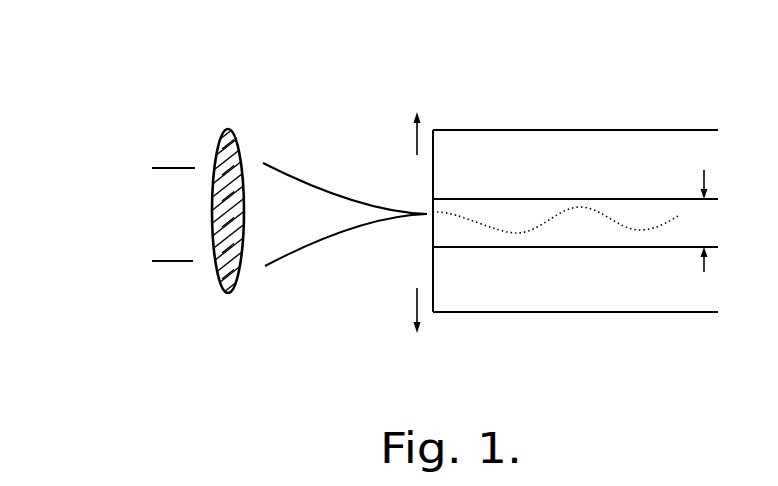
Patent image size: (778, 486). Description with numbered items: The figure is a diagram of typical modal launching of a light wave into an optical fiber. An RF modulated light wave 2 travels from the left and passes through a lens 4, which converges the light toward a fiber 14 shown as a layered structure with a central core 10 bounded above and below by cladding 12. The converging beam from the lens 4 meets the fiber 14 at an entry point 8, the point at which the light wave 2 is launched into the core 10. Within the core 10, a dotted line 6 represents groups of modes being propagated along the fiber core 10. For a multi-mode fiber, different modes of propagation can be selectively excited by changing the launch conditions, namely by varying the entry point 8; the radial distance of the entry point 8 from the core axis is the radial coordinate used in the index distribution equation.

The RF modulated light wave 2 is at (162, 246).
The lens 4 is at (232, 143).
The dotted line 6 is at (632, 230).
The entry point 8 is at (428, 212).
The core 10 is at (703, 225).
The cladding 12 is at (635, 143).
The fiber 14 is at (492, 72).